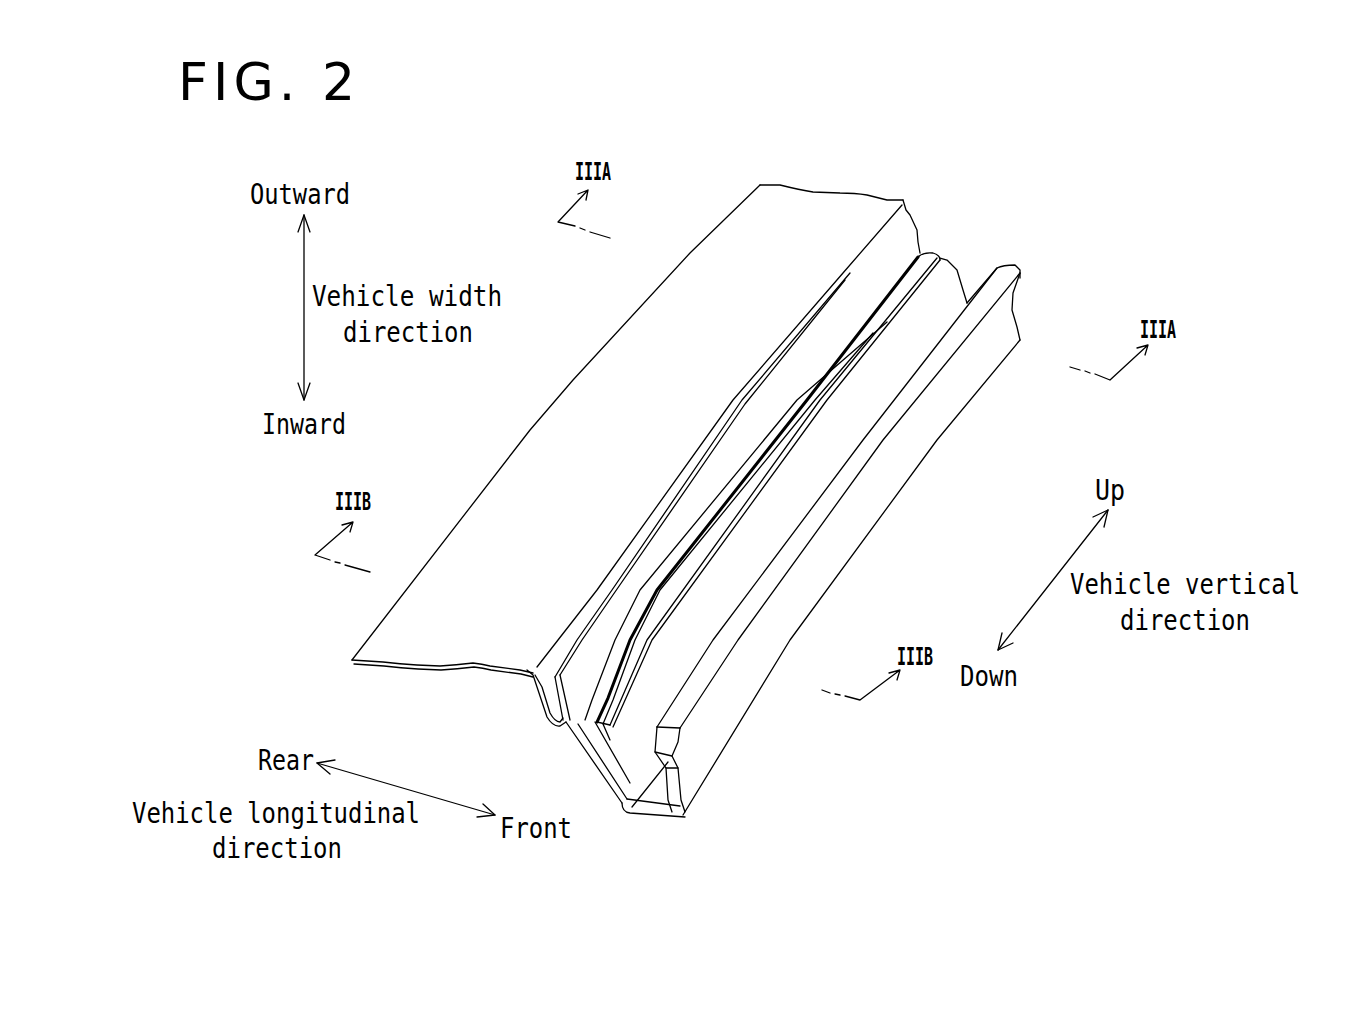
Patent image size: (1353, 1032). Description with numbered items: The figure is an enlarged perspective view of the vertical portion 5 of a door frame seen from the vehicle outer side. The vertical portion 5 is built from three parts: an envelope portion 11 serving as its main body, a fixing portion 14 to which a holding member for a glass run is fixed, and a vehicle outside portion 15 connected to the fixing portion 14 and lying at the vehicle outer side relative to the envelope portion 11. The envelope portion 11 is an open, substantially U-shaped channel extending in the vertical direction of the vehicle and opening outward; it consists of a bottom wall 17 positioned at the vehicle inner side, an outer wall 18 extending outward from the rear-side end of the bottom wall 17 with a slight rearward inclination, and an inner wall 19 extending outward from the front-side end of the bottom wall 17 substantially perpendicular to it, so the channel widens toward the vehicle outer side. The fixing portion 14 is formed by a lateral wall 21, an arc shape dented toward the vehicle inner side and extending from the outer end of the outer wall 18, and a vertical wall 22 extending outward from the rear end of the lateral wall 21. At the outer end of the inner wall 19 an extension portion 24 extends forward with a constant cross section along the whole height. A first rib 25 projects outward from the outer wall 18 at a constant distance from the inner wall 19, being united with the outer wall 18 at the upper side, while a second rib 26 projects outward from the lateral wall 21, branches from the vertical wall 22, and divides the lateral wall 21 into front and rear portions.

The vertical portion 5 is at (1016, 202).
The envelope portion 11 is at (945, 258).
The fixing portion 14 is at (920, 205).
The vehicle outside portion 15 is at (735, 210).
The bottom wall 17 is at (655, 818).
The outer wall 18 is at (605, 782).
The inner wall 19 is at (672, 780).
The lateral wall 21 is at (565, 727).
The vertical wall 22 is at (532, 687).
The extension portion 24 is at (752, 598).
The first rib 25 is at (655, 640).
The second rib 26 is at (593, 617).